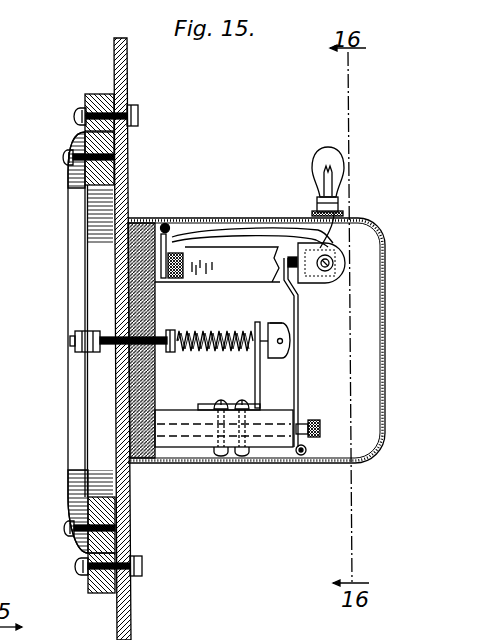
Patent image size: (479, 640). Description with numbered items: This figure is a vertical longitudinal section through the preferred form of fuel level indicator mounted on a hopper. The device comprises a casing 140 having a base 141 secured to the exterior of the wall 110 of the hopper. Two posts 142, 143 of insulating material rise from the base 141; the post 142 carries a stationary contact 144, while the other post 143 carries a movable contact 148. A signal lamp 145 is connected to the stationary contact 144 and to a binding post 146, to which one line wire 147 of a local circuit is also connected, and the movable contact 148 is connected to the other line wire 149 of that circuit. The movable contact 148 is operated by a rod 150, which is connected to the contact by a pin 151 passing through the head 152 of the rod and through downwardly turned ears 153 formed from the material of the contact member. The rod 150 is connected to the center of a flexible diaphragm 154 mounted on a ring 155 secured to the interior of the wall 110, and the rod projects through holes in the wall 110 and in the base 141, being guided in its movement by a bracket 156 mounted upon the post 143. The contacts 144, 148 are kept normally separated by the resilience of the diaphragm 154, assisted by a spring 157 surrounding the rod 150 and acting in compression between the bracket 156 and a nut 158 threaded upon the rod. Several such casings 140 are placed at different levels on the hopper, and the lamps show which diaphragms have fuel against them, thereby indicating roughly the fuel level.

The wall 110 is at (128, 617).
The casing 140 is at (382, 357).
The base 141 is at (141, 468).
The post 142 is at (221, 259).
The post 143 is at (200, 450).
The stationary contact 144 is at (293, 256).
The signal lamp 145 is at (318, 152).
The binding post 146 is at (183, 257).
The line wire 147 is at (174, 217).
The movable contact 148 is at (300, 292).
The line wire 149 is at (304, 454).
The rod 150 is at (98, 356).
The pin 151 is at (283, 347).
The head 152 is at (273, 324).
The downwardly turned ears 153 is at (290, 333).
The flexible diaphragm 154 is at (85, 233).
The ring 155 is at (99, 93).
The bracket 156 is at (255, 370).
The spring 157 is at (206, 352).
The nut 158 is at (170, 329).